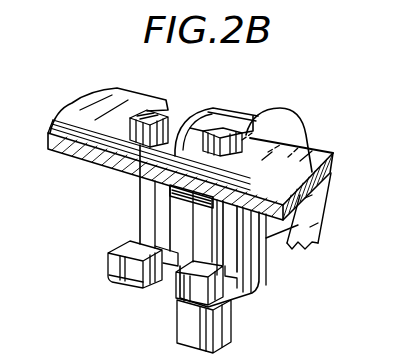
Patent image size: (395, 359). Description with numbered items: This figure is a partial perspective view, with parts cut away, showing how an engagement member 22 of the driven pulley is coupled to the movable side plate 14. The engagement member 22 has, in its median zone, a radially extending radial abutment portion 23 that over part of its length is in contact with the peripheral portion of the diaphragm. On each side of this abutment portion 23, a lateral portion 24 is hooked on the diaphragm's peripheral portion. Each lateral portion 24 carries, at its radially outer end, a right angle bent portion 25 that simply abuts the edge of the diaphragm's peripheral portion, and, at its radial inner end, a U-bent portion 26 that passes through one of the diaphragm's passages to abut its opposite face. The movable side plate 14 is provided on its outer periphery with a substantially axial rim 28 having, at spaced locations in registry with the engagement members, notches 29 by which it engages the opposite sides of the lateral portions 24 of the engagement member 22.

The movable side plate 14 is at (78, 107).
The axial rim 28 is at (150, 100).
The notches 29 is at (167, 110).
The right angle bent portion 25 is at (143, 147).
The lateral portion 24 is at (150, 213).
The U-bent portion 26 is at (115, 238).
The radial abutment portion 23 is at (187, 328).
The engagement member 22 is at (259, 292).